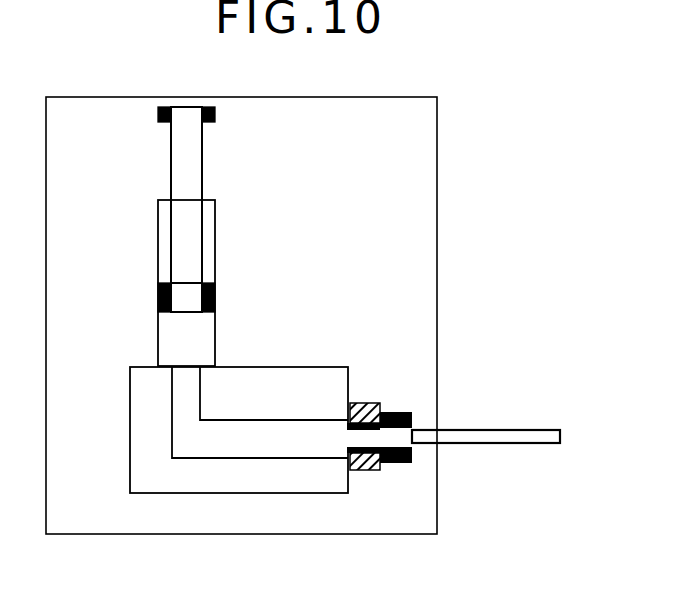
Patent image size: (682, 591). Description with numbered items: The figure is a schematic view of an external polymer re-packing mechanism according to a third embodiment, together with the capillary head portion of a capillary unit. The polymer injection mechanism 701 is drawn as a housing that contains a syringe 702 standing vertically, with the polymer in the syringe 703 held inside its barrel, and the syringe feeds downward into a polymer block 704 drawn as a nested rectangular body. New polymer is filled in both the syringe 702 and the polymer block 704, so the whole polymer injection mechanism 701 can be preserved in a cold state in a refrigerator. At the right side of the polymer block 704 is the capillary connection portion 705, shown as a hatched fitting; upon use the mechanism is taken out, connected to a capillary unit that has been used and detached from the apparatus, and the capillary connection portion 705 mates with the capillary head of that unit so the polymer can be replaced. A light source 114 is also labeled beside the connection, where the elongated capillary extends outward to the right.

The polymer injection mechanism 701 is at (241, 329).
The syringe 702 is at (187, 117).
The polymer in the syringe 703 is at (170, 338).
The polymer block 704 is at (282, 380).
The capillary connection portion 705 is at (363, 403).
The light source 114 is at (398, 412).